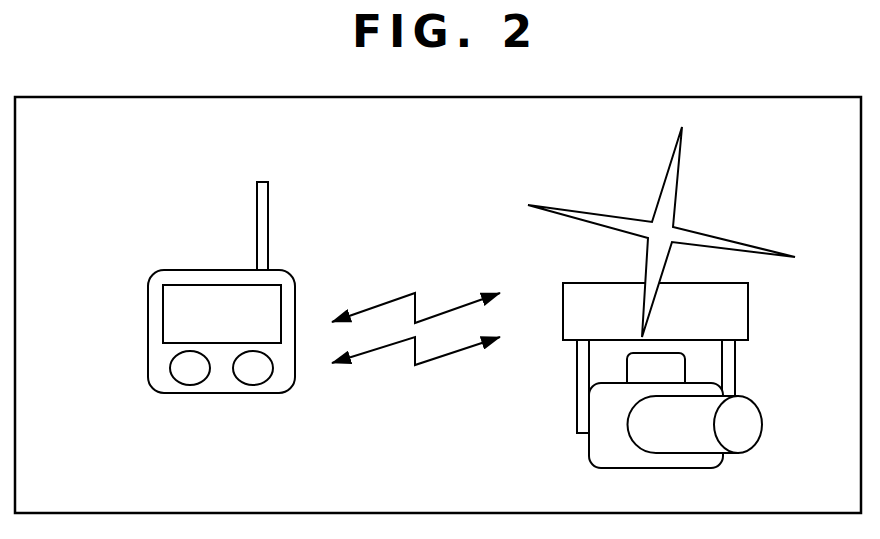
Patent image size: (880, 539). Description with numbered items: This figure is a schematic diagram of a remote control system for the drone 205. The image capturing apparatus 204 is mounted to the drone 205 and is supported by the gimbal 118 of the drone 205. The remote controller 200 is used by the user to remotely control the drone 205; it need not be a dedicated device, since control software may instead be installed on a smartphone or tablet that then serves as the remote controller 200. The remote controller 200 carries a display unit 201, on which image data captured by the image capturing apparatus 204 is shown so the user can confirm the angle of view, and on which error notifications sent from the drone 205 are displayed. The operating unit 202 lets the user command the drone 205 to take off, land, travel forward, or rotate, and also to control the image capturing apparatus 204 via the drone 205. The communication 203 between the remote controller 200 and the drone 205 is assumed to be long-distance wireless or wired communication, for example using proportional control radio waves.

The remote controller 200 is at (148, 305).
The display unit 201 is at (217, 285).
The operating unit 202 is at (170, 373).
The communication 203 is at (425, 285).
The image capturing apparatus 204 is at (588, 445).
The drone 205 is at (600, 283).
The gimbal 118 is at (735, 355).